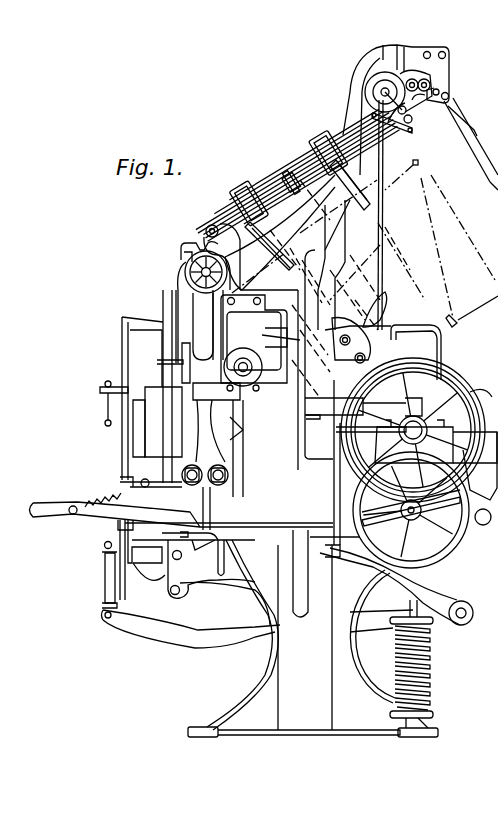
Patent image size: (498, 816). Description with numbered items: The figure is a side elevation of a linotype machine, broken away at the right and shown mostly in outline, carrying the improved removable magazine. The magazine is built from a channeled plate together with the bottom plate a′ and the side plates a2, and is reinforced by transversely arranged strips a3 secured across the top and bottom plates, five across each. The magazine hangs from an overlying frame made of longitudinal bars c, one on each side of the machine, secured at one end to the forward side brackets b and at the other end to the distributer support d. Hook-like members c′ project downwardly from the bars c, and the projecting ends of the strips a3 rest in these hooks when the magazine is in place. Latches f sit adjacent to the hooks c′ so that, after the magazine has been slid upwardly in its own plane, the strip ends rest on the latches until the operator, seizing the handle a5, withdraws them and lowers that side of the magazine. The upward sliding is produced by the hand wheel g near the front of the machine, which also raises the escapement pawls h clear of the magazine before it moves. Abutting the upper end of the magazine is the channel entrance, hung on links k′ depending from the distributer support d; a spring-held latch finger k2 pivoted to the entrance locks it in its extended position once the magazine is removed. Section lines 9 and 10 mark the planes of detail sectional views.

The distributer support d is at (366, 70).
The section line 10— 10 is at (342, 131).
The escapement pawls h is at (407, 122).
The links k′ is at (406, 133).
The hook-like members c′ is at (305, 163).
The side plates a2 is at (300, 170).
The latches f is at (242, 193).
The latch finger k2 is at (312, 146).
The bottom plate a′ is at (298, 196).
The transverse strips a3 is at (360, 200).
The handle a5 is at (352, 215).
The longitudinal bars c is at (228, 218).
The forward side brackets b is at (200, 240).
The hand wheel g is at (186, 266).
The section line 9— 9 is at (180, 247).